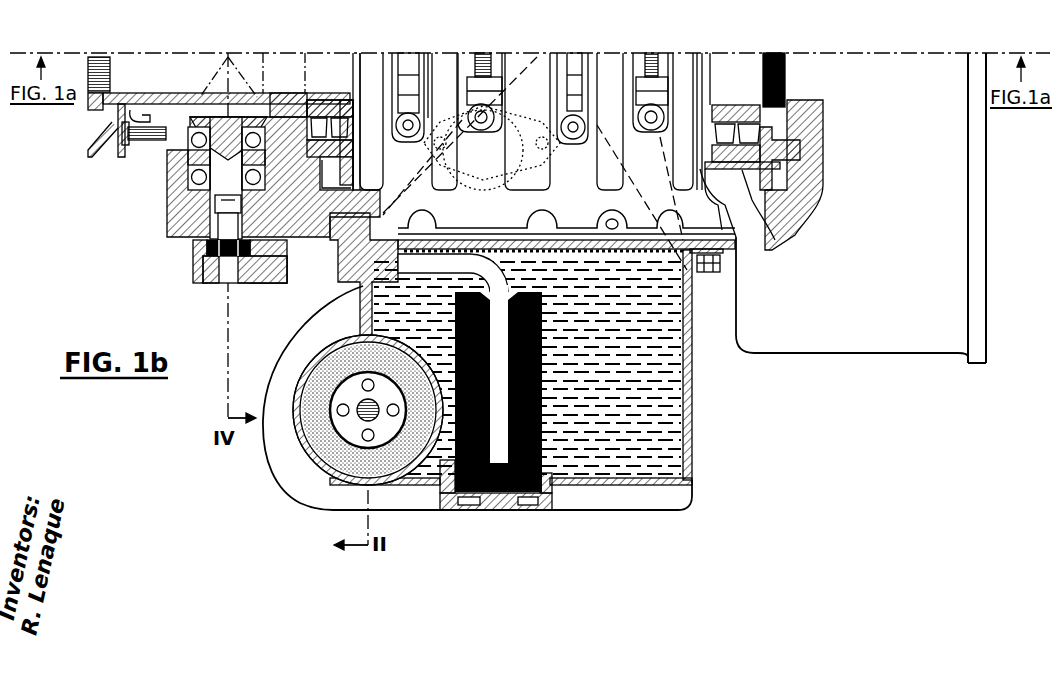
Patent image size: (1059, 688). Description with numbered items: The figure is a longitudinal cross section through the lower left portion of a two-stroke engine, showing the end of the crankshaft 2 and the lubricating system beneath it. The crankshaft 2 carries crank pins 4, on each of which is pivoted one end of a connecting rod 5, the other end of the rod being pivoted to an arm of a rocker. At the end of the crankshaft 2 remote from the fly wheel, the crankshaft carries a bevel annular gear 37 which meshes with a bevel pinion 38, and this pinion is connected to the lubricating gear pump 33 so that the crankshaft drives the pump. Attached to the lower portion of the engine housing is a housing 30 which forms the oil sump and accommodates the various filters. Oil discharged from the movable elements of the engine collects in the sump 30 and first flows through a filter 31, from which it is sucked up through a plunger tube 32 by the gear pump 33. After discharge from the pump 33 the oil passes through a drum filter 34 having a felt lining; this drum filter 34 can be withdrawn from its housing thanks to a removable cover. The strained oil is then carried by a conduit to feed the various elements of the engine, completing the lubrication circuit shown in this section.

The crankshaft 2 is at (111, 128).
The bevel pinion 38 is at (160, 150).
The bevel annular gear 37 is at (257, 96).
The connecting rod 5 is at (483, 75).
The crank pin 4 is at (334, 258).
The gear pump 33 is at (228, 257).
The drum filter 34 is at (334, 422).
The housing forming an oil sump 30 is at (688, 390).
The plunger tube 32 is at (493, 445).
The filter 31 is at (540, 432).